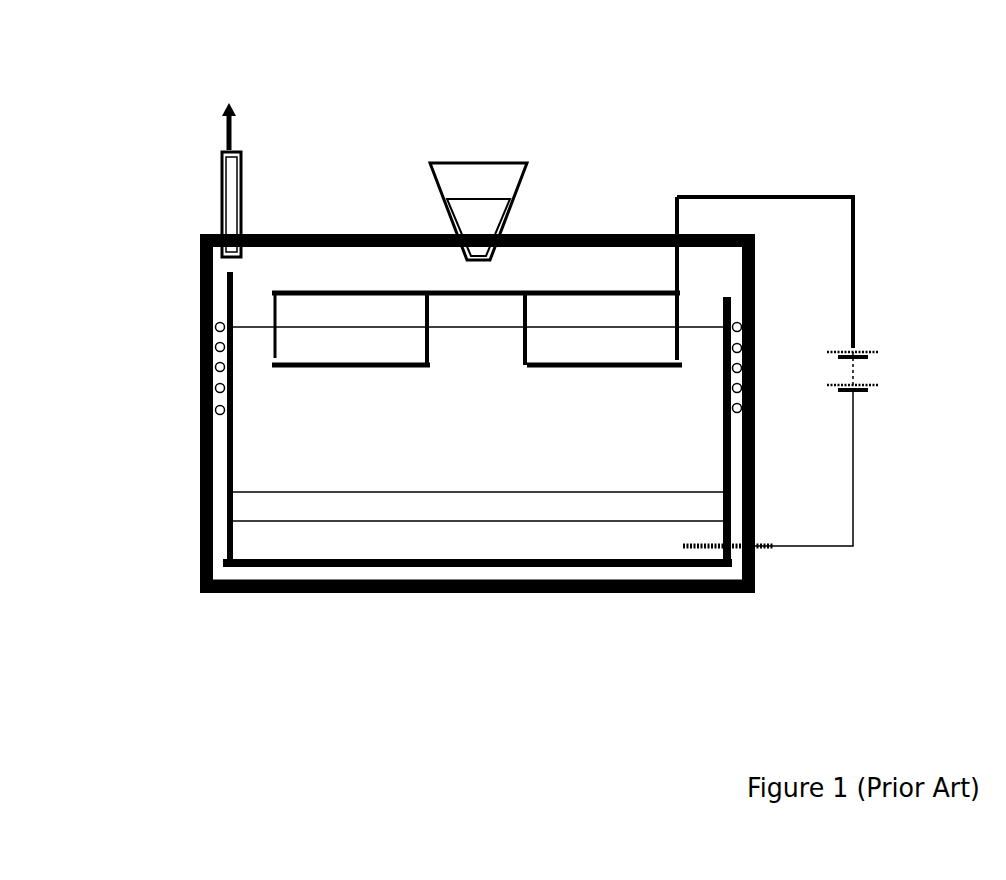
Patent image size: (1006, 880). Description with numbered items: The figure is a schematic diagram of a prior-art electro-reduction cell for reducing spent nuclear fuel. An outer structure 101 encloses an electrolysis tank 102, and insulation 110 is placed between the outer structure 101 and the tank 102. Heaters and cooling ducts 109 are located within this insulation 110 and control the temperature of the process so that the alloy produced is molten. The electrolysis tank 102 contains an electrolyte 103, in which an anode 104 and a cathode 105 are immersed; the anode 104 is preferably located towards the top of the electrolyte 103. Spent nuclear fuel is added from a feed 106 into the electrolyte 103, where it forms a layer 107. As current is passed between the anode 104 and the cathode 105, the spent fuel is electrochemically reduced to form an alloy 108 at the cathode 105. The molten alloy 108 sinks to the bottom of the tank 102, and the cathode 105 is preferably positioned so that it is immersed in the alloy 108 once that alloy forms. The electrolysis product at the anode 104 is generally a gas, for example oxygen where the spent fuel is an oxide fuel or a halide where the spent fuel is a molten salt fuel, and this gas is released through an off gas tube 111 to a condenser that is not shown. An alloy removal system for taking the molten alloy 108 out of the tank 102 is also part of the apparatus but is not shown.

The outer structure 101 is at (525, 595).
The electrolysis tank 102 is at (645, 565).
The electrolyte 103 is at (643, 435).
The anode 104 is at (553, 362).
The cathode 105 is at (693, 550).
The feed 106 is at (478, 162).
The layer 107 is at (677, 512).
The alloy 108 is at (657, 543).
The heaters and cooling ducts 109 is at (220, 370).
The insulation 110 is at (597, 577).
The off gas tube 111 is at (223, 163).